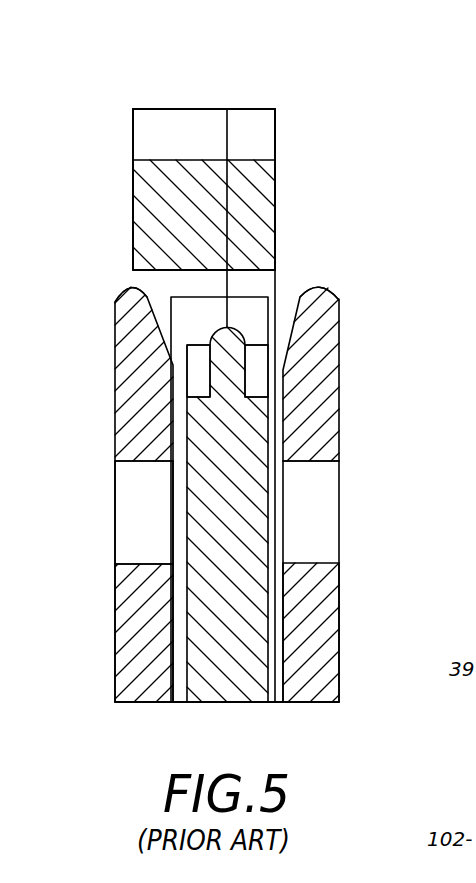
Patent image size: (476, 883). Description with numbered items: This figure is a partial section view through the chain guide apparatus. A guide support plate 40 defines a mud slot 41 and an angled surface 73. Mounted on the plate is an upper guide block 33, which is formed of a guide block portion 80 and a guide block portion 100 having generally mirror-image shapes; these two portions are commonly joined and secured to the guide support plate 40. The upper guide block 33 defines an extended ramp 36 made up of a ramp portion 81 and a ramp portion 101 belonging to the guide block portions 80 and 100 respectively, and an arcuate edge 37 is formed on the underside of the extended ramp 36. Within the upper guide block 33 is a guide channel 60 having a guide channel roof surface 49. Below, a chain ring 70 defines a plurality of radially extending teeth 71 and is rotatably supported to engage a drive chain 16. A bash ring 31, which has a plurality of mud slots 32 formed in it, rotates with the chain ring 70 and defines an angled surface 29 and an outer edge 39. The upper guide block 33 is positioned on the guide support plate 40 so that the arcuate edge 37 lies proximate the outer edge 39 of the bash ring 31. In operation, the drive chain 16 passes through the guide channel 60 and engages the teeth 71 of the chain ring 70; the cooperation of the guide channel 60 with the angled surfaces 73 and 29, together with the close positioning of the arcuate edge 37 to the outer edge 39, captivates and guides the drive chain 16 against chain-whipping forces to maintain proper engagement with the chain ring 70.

The guide block portion 100 is at (150, 108).
The extended ramp 36 is at (200, 143).
The guide block portion 80 is at (257, 108).
The upper guide block 33 is at (278, 137).
The ramp portion 101 is at (133, 185).
The ramp portion 81 is at (275, 213).
The angled surface 29 is at (140, 325).
The arcuate edge 37 is at (193, 272).
The guide channel 60 is at (227, 316).
The angled surface 73 is at (299, 300).
The outer edge 39 is at (125, 290).
The guide channel roof surface 49 is at (200, 298).
The radially extending teeth 71 is at (214, 328).
The drive chain 16 is at (204, 372).
The guide support plate 40 is at (339, 408).
The mud slot 41 is at (310, 462).
The mud slots 32 is at (147, 462).
The chain ring 70 is at (243, 548).
The bash ring 31 is at (115, 648).